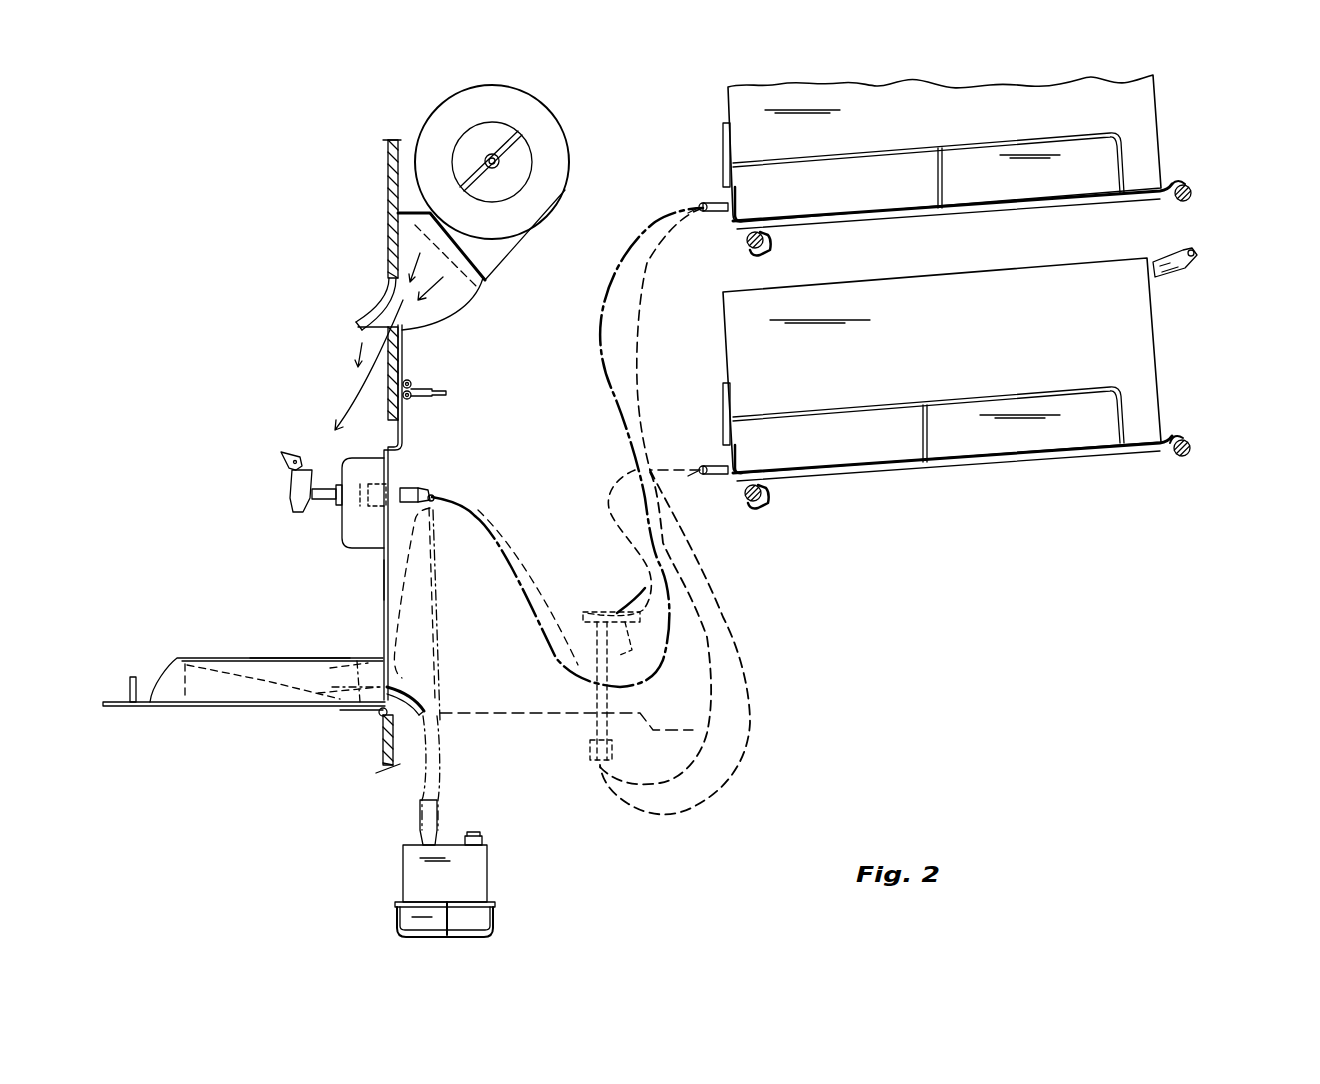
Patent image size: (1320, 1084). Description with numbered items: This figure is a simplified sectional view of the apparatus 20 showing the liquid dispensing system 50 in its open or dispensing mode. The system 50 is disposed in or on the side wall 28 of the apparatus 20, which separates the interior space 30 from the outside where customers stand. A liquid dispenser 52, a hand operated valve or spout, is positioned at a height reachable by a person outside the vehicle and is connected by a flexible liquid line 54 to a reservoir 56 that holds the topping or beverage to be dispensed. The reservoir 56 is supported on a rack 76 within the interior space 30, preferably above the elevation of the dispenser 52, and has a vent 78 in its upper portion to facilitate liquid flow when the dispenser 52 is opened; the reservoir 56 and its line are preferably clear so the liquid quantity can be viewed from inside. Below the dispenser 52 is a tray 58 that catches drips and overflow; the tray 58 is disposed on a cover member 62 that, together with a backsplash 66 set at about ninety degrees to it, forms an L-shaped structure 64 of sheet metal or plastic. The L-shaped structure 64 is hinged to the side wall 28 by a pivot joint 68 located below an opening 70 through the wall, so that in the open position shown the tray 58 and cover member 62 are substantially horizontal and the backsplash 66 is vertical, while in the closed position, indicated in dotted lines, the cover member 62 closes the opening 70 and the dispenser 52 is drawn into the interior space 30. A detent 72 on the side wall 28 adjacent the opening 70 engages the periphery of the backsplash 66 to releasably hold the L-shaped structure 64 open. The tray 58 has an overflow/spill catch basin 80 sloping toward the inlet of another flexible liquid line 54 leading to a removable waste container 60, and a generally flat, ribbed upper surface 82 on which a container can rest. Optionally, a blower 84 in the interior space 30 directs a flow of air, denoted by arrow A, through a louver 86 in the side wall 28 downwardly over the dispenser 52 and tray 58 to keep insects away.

The apparatus 20 is at (1228, 121).
The side wall 28 is at (385, 165).
The interior space 30 is at (627, 148).
The liquid dispensing system 50 is at (344, 452).
The liquid dispenser 52 is at (290, 485).
The liquid line 54 is at (635, 312).
The reservoir 56 is at (1158, 115).
The tray 58 is at (178, 660).
The waste container 60 is at (403, 867).
The cover member 62 is at (190, 706).
The L-shaped structure 64 is at (134, 706).
The backsplash 66 is at (385, 580).
The pivot joint 68 is at (378, 715).
The opening 70 is at (400, 465).
The detent 72 is at (418, 386).
The rack 76 is at (1195, 183).
The vent 78 is at (1197, 262).
The overflow/spill catch basin 80 is at (297, 690).
The flat upper surface 82 is at (230, 658).
The blower 84 is at (547, 118).
The louver 86 is at (372, 305).
The arrow A is at (352, 385).